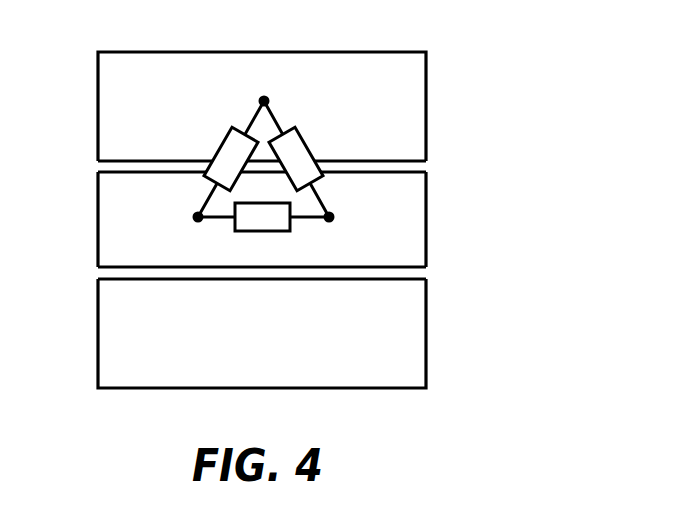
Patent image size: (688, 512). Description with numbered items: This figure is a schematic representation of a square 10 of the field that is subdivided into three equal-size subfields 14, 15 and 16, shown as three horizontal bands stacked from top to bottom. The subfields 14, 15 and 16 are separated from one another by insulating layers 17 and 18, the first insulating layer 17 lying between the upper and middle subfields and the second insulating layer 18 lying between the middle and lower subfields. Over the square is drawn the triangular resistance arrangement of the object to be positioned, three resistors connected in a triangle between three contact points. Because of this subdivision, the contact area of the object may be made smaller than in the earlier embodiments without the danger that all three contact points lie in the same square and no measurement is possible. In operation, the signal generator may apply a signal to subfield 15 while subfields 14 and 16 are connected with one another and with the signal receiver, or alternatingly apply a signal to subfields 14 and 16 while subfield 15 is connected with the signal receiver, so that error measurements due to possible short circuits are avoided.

The square 10 is at (307, 217).
The subfield 14 is at (408, 87).
The subfield 15 is at (418, 222).
The subfield 16 is at (412, 301).
The insulating layer 17 is at (103, 167).
The insulating layer 18 is at (105, 273).